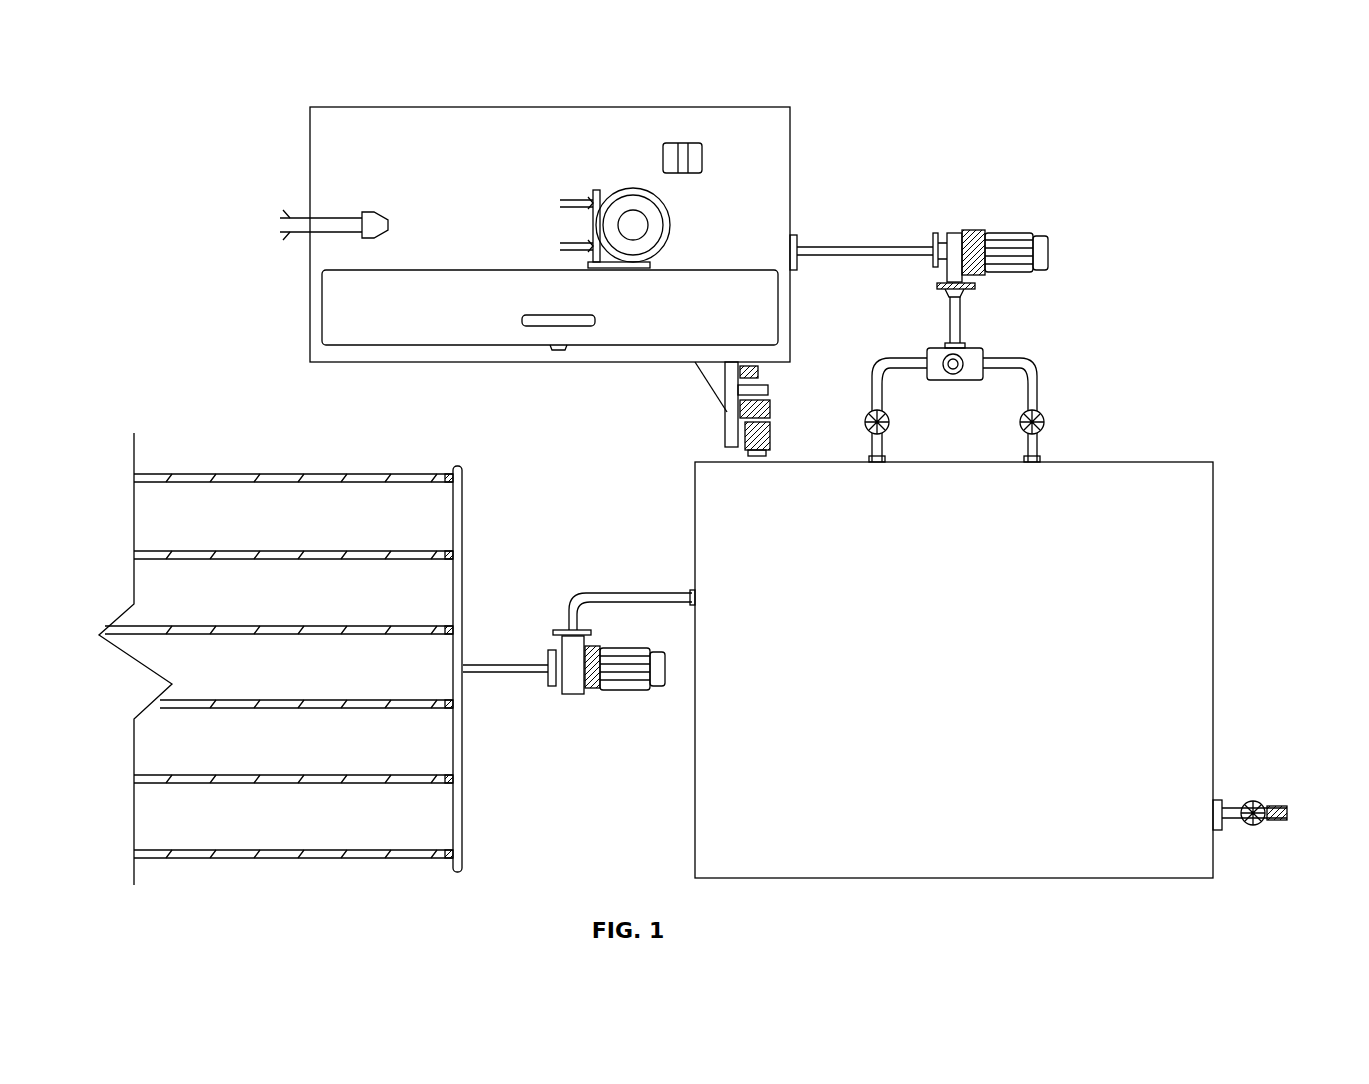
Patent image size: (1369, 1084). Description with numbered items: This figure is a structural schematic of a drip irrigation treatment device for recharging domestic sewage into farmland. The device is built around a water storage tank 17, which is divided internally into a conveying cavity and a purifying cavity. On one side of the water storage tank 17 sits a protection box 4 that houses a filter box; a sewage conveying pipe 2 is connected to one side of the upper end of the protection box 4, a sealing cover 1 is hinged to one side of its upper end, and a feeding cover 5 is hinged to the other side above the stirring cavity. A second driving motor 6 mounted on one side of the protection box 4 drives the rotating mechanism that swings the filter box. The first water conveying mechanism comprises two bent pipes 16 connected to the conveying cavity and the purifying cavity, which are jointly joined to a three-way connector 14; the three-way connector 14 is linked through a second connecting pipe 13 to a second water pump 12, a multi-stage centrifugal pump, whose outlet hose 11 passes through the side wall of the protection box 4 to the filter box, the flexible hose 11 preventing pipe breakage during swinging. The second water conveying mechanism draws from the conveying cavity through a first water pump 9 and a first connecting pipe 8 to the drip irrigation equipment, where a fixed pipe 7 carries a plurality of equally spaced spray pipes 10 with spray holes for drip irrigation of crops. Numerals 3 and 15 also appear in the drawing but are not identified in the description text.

The sealing cover 1 is at (417, 317).
The sewage conveying pipe 2 is at (330, 220).
The fan 3 is at (593, 192).
The protection box 4 is at (603, 160).
The feeding cover 5 is at (663, 165).
The second driving motor 6 is at (740, 430).
The fixed pipe 7 is at (462, 672).
The first connecting pipe 8 is at (497, 670).
The first water pump 9 is at (580, 690).
The spray pipe 10 is at (460, 715).
The hose 11 is at (940, 240).
The second water pump 12 is at (985, 240).
The second connecting pipe 13 is at (1035, 245).
The three-way connector 14 is at (955, 355).
The valve 15 is at (885, 420).
The bent pipes 16 is at (1030, 365).
The water storage tank 17 is at (1160, 827).